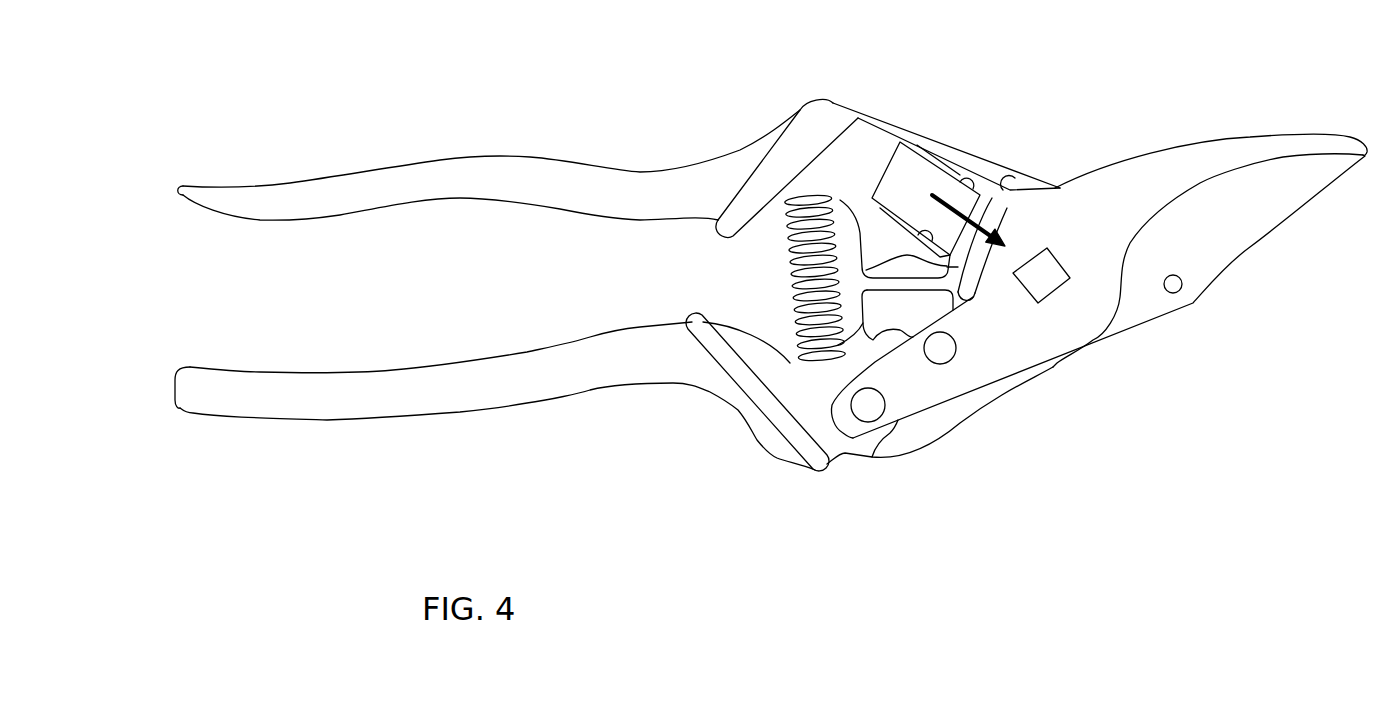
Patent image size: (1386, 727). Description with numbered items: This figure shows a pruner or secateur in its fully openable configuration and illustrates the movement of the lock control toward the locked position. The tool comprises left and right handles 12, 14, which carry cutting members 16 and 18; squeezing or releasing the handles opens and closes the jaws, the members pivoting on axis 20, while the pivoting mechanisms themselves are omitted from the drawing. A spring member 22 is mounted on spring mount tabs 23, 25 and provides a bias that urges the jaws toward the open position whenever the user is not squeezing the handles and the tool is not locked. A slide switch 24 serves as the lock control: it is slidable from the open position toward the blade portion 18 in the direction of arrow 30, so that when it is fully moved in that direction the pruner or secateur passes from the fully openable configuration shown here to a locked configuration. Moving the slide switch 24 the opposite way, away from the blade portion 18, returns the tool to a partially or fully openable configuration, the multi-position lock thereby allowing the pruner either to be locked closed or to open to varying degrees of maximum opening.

The left handle 12 is at (451, 178).
The right handle 14 is at (393, 398).
The cutting member 16 is at (1238, 222).
The cutting member 18 is at (1220, 153).
The axis 20 is at (1045, 283).
The spring member 22 is at (790, 275).
The spring mount tab 23 is at (810, 207).
The slide switch 24 is at (935, 177).
The spring mount tab 25 is at (813, 362).
The arrow 30 is at (987, 207).